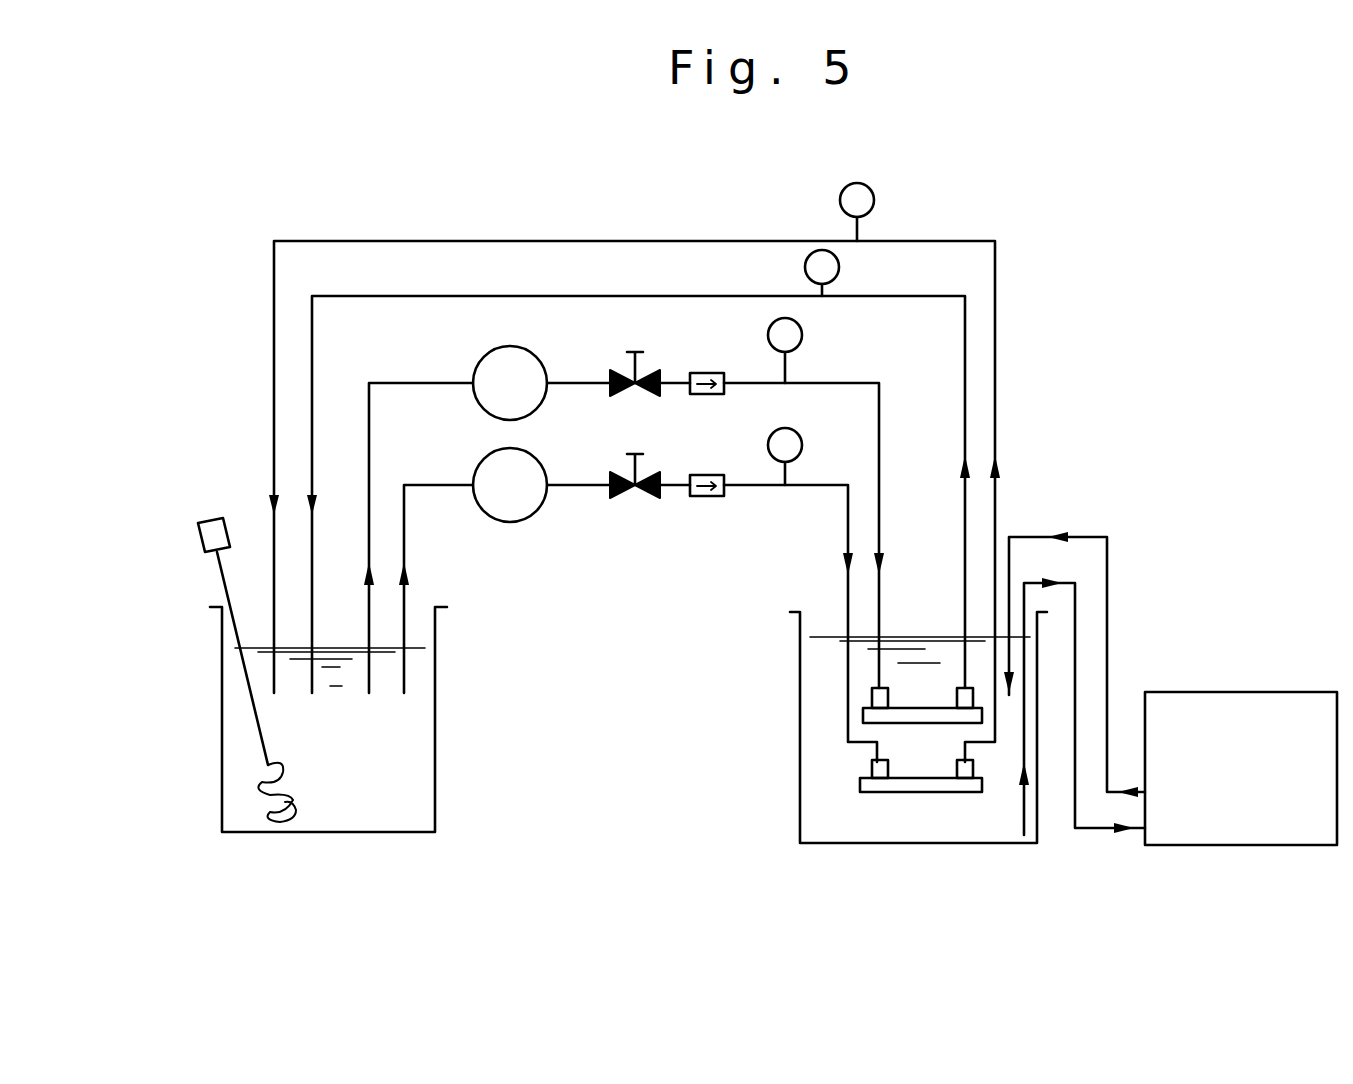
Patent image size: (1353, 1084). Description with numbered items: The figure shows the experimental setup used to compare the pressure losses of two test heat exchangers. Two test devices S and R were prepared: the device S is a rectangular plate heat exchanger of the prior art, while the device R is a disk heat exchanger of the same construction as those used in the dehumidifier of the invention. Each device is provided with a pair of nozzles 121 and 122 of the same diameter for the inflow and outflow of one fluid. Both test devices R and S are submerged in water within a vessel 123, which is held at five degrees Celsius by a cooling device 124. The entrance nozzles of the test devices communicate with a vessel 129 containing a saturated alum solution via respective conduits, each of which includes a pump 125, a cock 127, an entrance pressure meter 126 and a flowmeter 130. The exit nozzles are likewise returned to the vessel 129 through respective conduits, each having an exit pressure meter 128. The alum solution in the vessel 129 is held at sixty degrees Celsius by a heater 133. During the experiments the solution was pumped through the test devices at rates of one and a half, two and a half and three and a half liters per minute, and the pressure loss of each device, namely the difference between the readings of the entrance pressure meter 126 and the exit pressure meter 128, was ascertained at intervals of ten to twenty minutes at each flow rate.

The nozzle 121 is at (870, 771).
The nozzle 122 is at (872, 700).
The vessel 123 is at (932, 845).
The cooling device 124 is at (1262, 792).
The pump 125 is at (502, 348).
The entrance pressure meter 126 is at (802, 332).
The cock 127 is at (642, 397).
The exit pressure meter 128 is at (875, 200).
The vessel 129 is at (376, 835).
The flowmeter 130 is at (712, 397).
The heater 133 is at (262, 732).
The test device R is at (925, 702).
The test device S is at (882, 795).